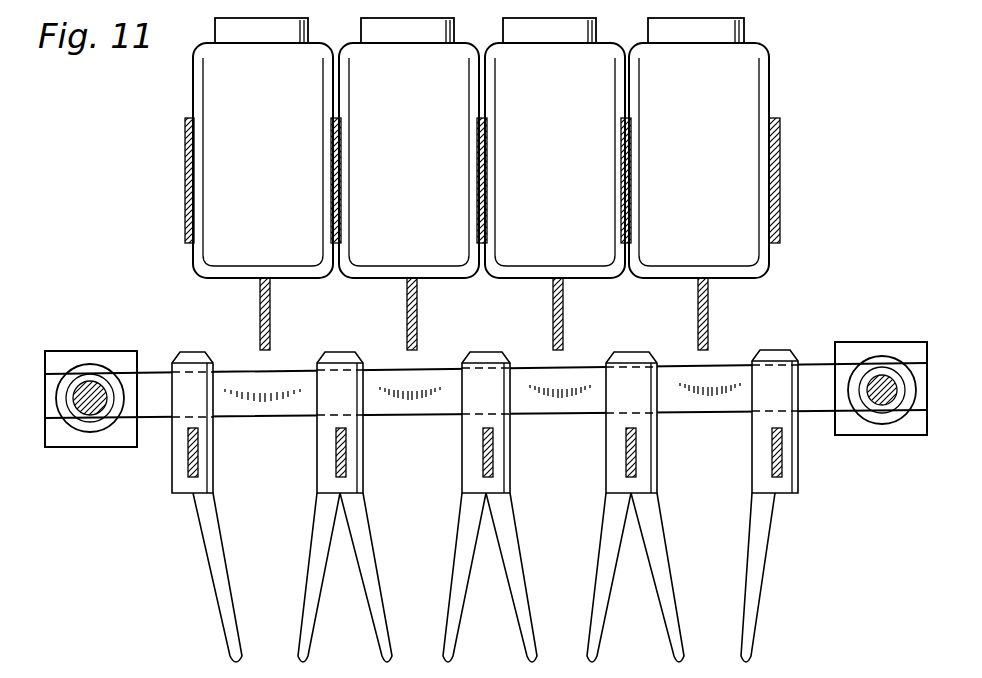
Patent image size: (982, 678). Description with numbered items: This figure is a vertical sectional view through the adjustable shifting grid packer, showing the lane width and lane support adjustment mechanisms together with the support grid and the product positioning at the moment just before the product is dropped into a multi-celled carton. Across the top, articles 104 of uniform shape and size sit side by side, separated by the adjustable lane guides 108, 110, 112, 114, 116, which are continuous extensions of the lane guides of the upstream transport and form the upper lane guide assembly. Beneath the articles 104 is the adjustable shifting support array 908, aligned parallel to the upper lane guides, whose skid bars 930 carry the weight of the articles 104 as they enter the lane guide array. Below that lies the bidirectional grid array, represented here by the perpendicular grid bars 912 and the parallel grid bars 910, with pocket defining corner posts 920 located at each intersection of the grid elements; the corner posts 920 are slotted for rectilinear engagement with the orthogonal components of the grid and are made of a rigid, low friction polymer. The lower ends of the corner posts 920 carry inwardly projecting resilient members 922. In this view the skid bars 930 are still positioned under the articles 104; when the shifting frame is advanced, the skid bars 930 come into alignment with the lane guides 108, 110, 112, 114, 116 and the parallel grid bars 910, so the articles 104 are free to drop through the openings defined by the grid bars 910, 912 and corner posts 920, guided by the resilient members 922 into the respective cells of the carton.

The articles 104 is at (285, 89).
The adjustable lane guide 108 is at (186, 175).
The adjustable lane guide 110 is at (333, 177).
The adjustable lane guide 112 is at (479, 179).
The adjustable lane guide 114 is at (623, 143).
The adjustable lane guide 116 is at (781, 178).
The adjustable shifting support array 908 is at (271, 327).
The skid bars 930 is at (407, 315).
The perpendicular grid bars 912 is at (148, 386).
The parallel grid bars 910 is at (188, 474).
The pocket defining corner posts 920 is at (214, 459).
The resilient members 922 is at (226, 580).